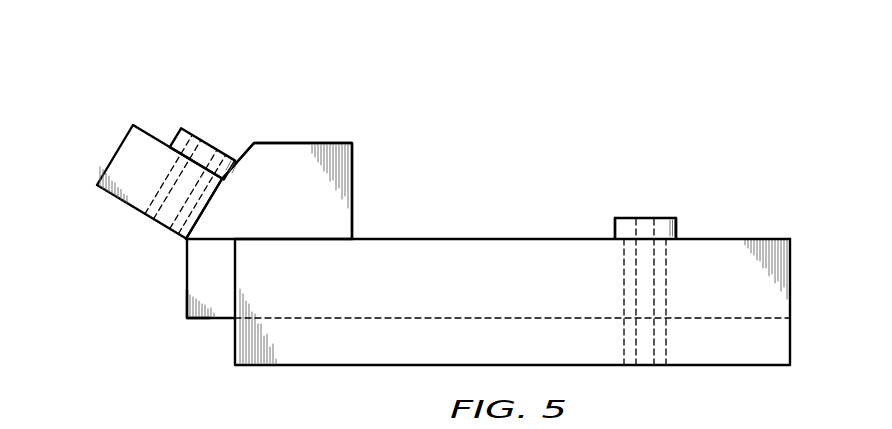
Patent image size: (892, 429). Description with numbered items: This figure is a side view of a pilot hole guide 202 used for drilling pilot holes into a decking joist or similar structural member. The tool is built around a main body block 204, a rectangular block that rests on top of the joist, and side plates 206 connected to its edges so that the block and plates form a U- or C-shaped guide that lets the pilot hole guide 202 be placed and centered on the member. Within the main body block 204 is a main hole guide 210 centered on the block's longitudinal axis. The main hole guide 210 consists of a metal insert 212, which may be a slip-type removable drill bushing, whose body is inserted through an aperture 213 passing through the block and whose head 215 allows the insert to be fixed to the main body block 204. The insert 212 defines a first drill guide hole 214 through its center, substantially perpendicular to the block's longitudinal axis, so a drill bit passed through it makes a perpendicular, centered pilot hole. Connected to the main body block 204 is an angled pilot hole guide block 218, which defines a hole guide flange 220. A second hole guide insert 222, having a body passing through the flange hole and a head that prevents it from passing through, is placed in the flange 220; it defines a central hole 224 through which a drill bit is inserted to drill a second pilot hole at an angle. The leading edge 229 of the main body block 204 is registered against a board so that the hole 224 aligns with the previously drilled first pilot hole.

The pilot hole guide 202 is at (538, 125).
The main body block 204 is at (202, 265).
The side plates 206 is at (442, 262).
The main hole guide 210 is at (665, 203).
The metal insert 212 is at (677, 226).
The aperture 213 is at (665, 275).
The first drill guide hole 214 is at (643, 227).
The head 215 is at (614, 228).
The angled pilot hole guide block 218 is at (353, 180).
The hole guide flange 220 is at (113, 155).
The second hole guide insert 222 is at (173, 132).
The hole 224 is at (203, 157).
The leading edge 229 is at (188, 297).